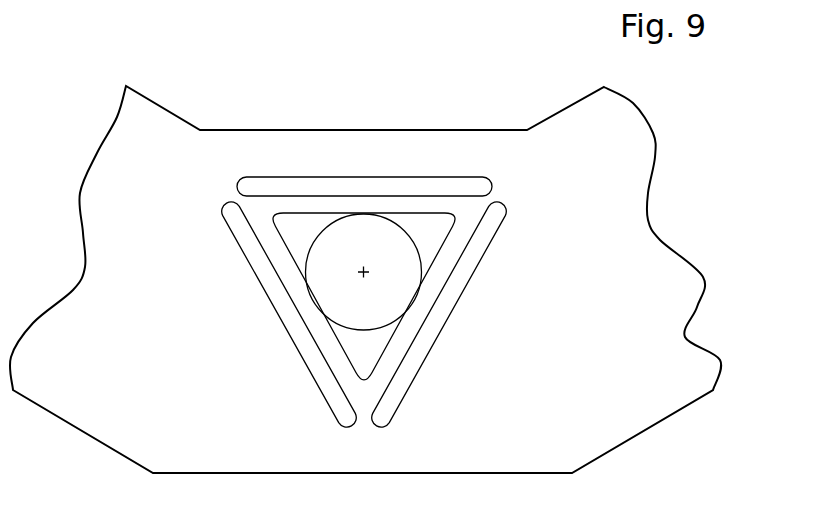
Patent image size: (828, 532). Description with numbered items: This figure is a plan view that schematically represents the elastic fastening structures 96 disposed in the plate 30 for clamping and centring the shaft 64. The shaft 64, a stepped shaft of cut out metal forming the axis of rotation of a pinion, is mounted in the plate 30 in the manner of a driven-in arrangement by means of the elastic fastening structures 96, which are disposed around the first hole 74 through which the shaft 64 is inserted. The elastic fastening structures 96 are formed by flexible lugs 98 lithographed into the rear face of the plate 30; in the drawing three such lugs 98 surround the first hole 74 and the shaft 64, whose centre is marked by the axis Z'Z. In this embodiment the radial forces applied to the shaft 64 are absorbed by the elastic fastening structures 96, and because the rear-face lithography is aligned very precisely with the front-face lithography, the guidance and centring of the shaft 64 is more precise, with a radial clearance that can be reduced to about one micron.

The plate 30 is at (660, 433).
The flexible lugs 98 is at (289, 207).
The first hole 74 is at (347, 367).
The stepped shaft 64 is at (358, 230).
The elastic fastening structures 96 is at (409, 160).
The axis Z'Z is at (437, 183).